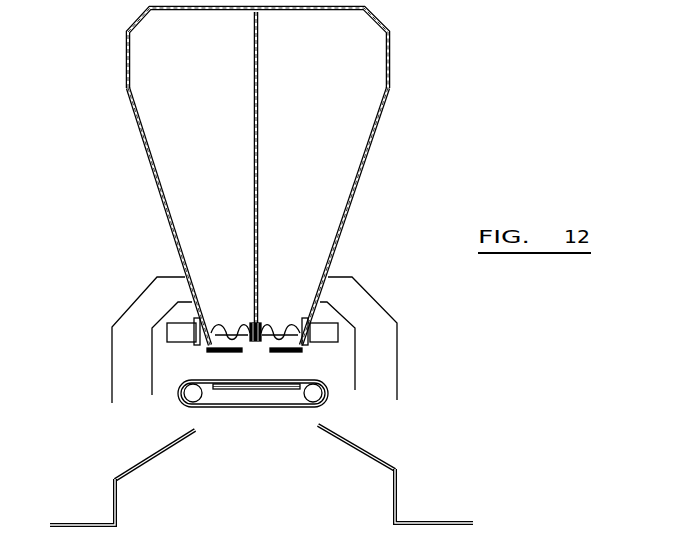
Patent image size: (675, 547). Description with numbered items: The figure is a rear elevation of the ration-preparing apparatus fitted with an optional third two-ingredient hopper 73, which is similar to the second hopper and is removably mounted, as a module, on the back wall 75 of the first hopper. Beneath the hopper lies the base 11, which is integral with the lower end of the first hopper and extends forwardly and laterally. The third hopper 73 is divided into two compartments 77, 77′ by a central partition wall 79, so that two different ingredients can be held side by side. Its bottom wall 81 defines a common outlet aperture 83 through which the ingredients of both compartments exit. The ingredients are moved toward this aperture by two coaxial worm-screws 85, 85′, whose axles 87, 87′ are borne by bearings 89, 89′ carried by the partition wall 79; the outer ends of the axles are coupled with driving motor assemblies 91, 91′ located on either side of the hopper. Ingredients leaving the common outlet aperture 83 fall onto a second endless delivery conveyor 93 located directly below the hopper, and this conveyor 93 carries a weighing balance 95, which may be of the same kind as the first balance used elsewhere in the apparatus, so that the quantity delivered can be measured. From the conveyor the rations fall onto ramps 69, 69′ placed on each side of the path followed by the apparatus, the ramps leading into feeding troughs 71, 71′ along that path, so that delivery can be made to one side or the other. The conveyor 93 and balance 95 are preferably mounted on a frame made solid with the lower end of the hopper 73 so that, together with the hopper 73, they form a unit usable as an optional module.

The base 11 is at (380, 305).
The ramp 69 is at (362, 447).
The ramp 69′ is at (148, 453).
The feeding trough 71 is at (406, 507).
The feeding trough 71′ is at (103, 507).
The third two-ingredient hopper 73 is at (266, 176).
The back wall 75 is at (282, 546).
The compartment 77 is at (347, 156).
The compartment 77′ is at (158, 153).
The partition wall 79 is at (258, 100).
The bottom wall 81 is at (213, 354).
The common outlet aperture 83 is at (257, 352).
The worm-screw 85 is at (294, 328).
The worm-screw 85′ is at (212, 328).
The axle 87 is at (275, 331).
The axle 87′ is at (226, 331).
The bearing 89 is at (248, 346).
The bearing 89′ is at (262, 348).
The driving motor assembly 91 is at (331, 332).
The driving motor assembly 91′ is at (167, 337).
The second endless delivery conveyor 93 is at (273, 406).
The weighing balance 95 is at (248, 397).